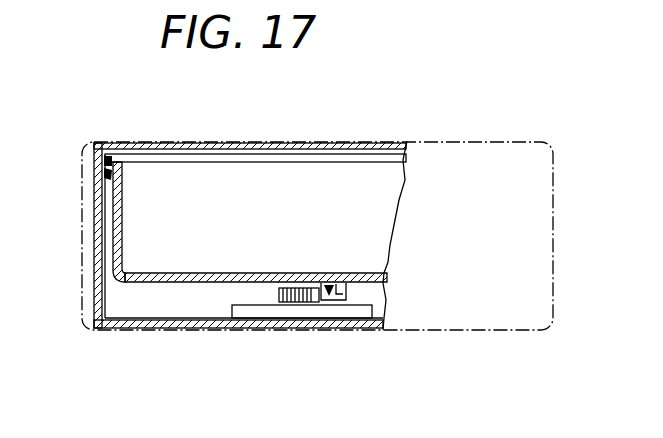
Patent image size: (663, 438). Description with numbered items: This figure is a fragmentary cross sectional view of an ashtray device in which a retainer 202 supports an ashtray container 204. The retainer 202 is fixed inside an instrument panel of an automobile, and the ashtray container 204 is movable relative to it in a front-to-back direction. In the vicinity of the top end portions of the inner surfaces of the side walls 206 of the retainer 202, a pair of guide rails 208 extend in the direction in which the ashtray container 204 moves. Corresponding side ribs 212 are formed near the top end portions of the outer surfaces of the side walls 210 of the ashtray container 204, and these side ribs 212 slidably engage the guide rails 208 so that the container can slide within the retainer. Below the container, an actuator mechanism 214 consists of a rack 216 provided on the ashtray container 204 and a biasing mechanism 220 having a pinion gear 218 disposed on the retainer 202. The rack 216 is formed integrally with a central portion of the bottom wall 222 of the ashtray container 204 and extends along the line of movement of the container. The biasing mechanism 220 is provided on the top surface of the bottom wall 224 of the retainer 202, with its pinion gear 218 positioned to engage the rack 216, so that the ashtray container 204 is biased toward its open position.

The retainer 202 is at (214, 226).
The ashtray container 204 is at (481, 141).
The side walls of the retainer 206 is at (97, 245).
The guide rails 208 is at (108, 165).
The side walls of the ashtray container 210 is at (255, 218).
The side ribs 212 is at (107, 171).
The actuator mechanism 214 is at (374, 294).
The rack 216 is at (338, 286).
The pinion gear 218 is at (293, 288).
The biasing mechanism 220 is at (250, 302).
The bottom wall of the ashtray container 222 is at (162, 277).
The bottom wall of the retainer 224 is at (173, 328).